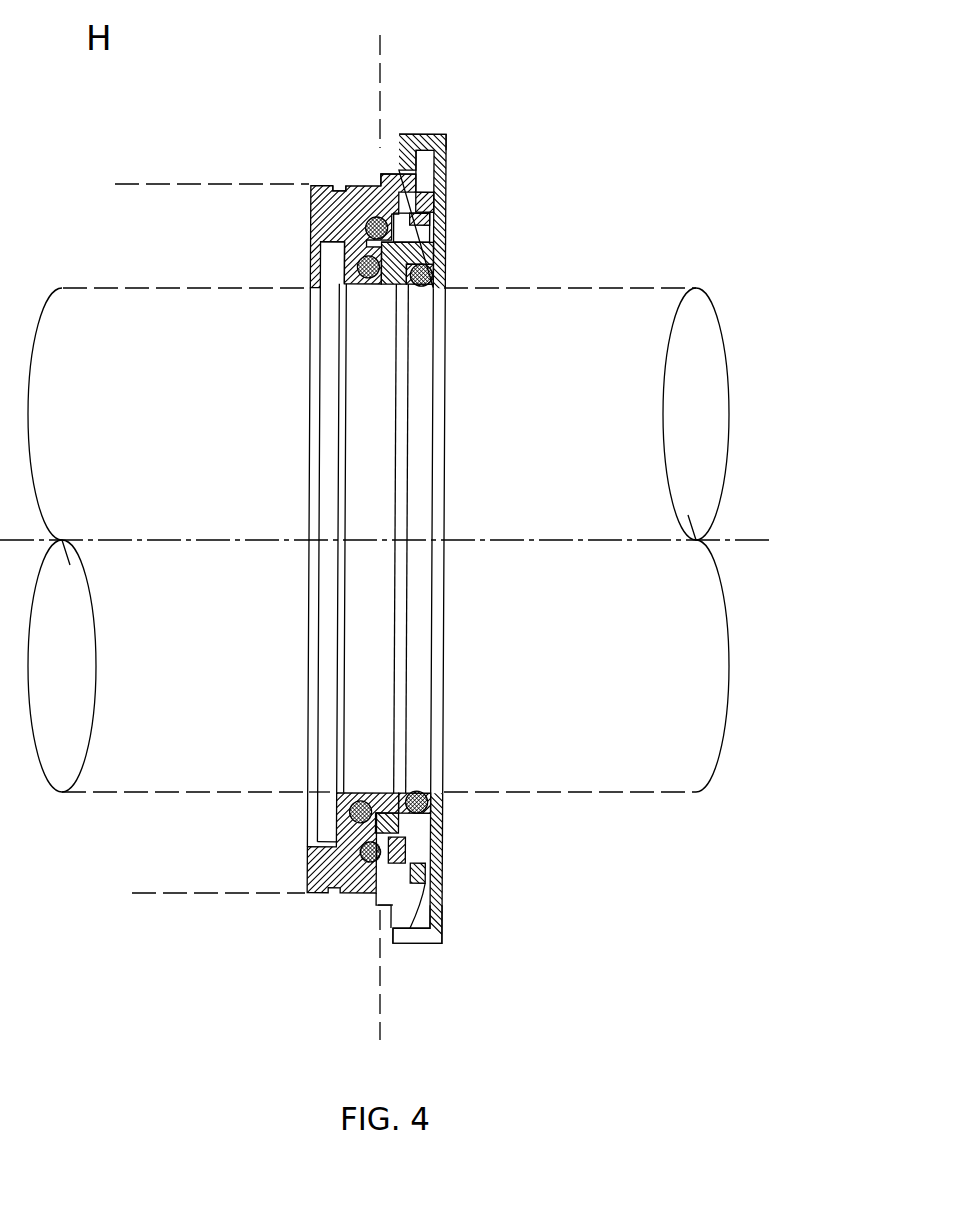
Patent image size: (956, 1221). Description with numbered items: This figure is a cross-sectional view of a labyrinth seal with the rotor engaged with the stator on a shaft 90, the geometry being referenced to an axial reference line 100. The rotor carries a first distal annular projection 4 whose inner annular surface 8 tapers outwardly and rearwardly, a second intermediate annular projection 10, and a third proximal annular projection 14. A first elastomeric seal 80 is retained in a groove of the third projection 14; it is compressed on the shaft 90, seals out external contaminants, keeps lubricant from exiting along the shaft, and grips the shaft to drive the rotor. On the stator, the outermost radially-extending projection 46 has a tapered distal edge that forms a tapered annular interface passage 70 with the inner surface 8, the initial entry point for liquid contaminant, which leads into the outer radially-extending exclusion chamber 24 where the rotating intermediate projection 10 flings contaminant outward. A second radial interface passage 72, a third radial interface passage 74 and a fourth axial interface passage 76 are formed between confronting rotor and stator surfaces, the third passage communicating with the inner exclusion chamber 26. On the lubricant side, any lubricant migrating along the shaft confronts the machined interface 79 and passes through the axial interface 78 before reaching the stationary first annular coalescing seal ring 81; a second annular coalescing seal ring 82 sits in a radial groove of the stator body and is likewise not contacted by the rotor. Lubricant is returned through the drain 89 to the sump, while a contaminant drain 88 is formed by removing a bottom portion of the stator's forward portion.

The first distal annular projection 4 is at (412, 150).
The inner annular surface 8 is at (433, 898).
The second intermediate annular projection 10 is at (310, 187).
The third proximal annular projection 14 is at (445, 255).
The outer radially-extending exclusion chamber 24 is at (382, 181).
The inner exclusion chamber 26 is at (340, 253).
The outermost radially-extending projection 46 is at (398, 162).
The tapered annular interface passage 70 is at (400, 137).
The second radial interface passage 72 is at (444, 174).
The third radial interface passage 74 is at (445, 220).
The fourth axial interface passage 76 is at (445, 192).
The axial interface 78 is at (376, 285).
The machined interface 79 is at (397, 289).
The first elastomeric seal 80 is at (412, 286).
The first annular coalescing seal ring 81 is at (318, 288).
The second annular coalescing seal ring 82 is at (366, 217).
The contaminant drain 88 is at (358, 935).
The drain 89 is at (273, 825).
The shaft 90 is at (540, 450).
The axial reference line 100 is at (515, 541).